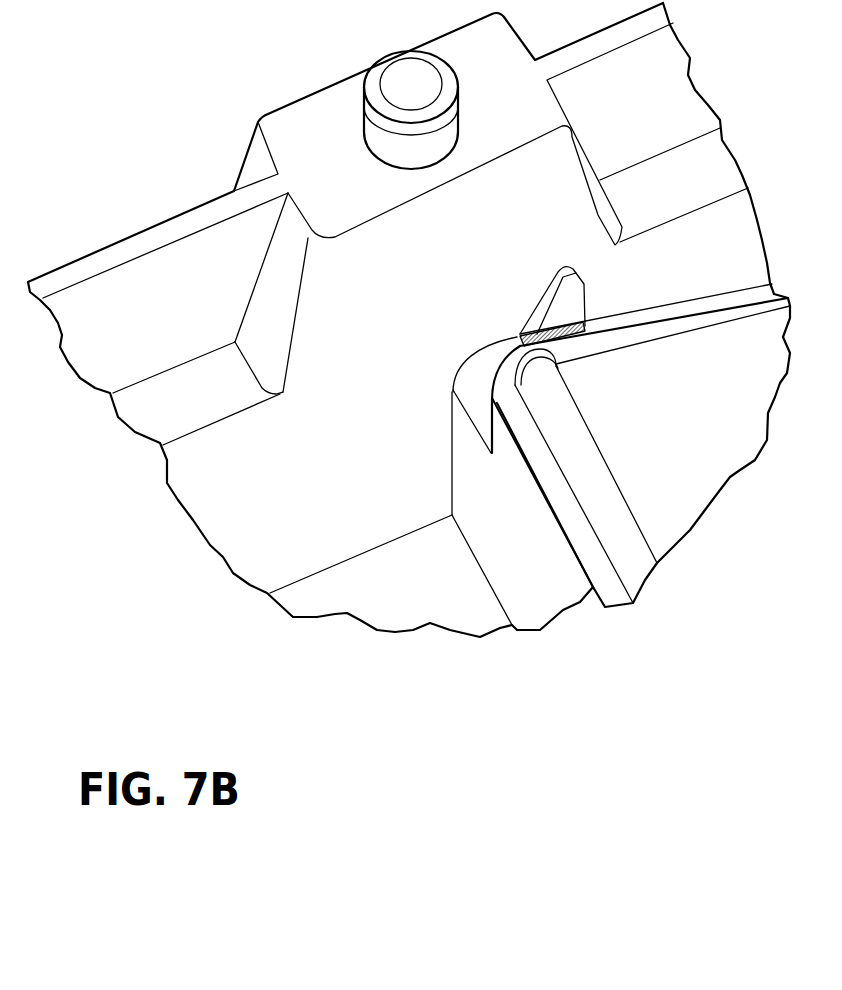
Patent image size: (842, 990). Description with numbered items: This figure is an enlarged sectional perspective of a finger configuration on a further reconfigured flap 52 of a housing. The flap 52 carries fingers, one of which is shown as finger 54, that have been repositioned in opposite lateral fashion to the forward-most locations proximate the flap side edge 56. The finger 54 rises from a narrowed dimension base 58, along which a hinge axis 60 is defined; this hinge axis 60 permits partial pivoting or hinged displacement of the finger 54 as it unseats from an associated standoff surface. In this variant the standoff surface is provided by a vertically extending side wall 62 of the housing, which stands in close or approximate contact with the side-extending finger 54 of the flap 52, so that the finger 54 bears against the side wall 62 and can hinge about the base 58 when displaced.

The flap 52 is at (670, 417).
The finger 54 is at (557, 312).
The flap side edge 56 is at (603, 338).
The narrowed dimension base 58 is at (520, 346).
The hinge axis 60 is at (502, 345).
The vertically extending side wall 62 is at (448, 259).